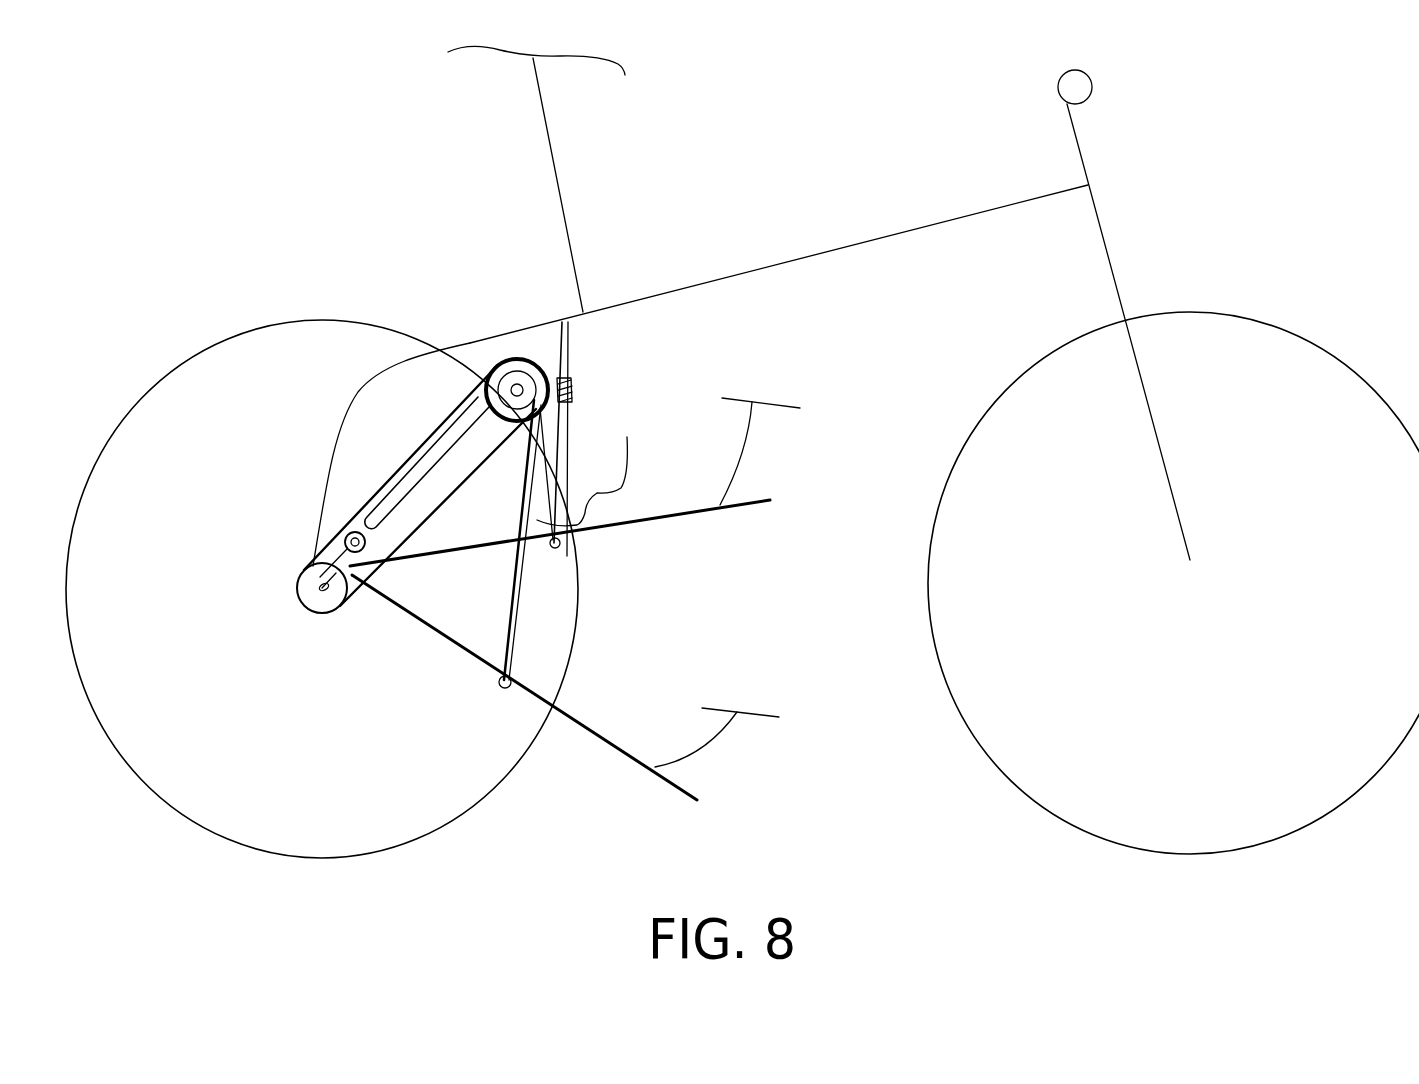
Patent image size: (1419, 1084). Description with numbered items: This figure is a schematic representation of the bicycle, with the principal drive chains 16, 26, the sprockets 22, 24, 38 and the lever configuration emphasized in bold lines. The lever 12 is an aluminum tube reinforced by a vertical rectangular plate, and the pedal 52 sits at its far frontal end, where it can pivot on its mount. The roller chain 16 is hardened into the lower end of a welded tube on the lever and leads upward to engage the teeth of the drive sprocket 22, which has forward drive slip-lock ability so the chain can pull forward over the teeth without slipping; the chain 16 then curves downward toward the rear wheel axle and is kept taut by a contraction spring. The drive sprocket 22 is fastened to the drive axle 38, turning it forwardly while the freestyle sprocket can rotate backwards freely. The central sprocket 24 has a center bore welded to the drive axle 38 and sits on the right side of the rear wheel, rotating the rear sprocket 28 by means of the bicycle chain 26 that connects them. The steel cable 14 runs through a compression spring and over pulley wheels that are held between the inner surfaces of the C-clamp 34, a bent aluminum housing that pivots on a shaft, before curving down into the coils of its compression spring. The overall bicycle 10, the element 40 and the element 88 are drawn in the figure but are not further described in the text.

The bicycle 10 is at (517, 388).
The lever 12 is at (616, 738).
The steel cable 14 is at (565, 462).
The roller chain 16 is at (430, 452).
The drive sprocket 22 is at (520, 387).
The central sprocket 24 is at (487, 366).
The bicycle chain 26 is at (452, 418).
The rear sprocket 28 is at (317, 606).
The C-clamp 34 is at (567, 362).
The drive axle 38 is at (458, 340).
The pin 40 is at (366, 540).
The pedal 52 is at (780, 408).
The axle 88 is at (320, 589).